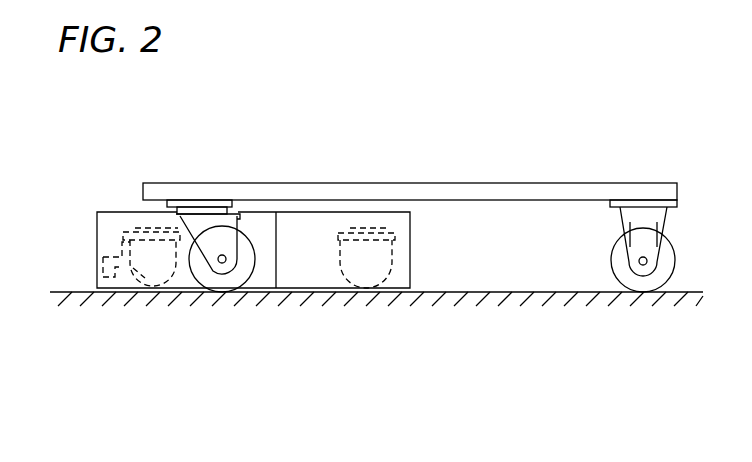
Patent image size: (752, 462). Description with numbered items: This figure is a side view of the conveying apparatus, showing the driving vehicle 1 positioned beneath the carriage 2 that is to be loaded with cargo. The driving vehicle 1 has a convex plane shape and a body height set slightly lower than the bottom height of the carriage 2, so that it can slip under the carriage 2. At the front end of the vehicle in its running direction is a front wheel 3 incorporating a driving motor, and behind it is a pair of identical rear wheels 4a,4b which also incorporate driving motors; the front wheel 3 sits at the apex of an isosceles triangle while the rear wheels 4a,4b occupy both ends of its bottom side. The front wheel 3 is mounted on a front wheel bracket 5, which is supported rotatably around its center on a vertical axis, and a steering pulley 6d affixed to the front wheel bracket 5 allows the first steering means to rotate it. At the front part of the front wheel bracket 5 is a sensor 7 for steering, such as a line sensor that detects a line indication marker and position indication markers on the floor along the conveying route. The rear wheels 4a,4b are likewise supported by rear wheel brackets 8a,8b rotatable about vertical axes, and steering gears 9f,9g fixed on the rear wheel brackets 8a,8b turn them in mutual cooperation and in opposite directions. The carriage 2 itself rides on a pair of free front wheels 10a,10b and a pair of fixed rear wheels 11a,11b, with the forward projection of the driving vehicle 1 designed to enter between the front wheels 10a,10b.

The driving vehicle 1 is at (108, 213).
The carriage 2 is at (459, 190).
The front wheel 3 is at (175, 278).
The rear wheels 4a,4b is at (390, 278).
The front wheel bracket 5 is at (143, 275).
The steering pulley 6d is at (123, 233).
The sensor for steering 7 is at (102, 266).
The rear wheel brackets 8a,8b is at (380, 250).
The steering gears 9f,9g is at (395, 234).
The front wheels of carriage 10a,10b is at (238, 270).
The rear wheels of carriage 11a,11b is at (643, 283).